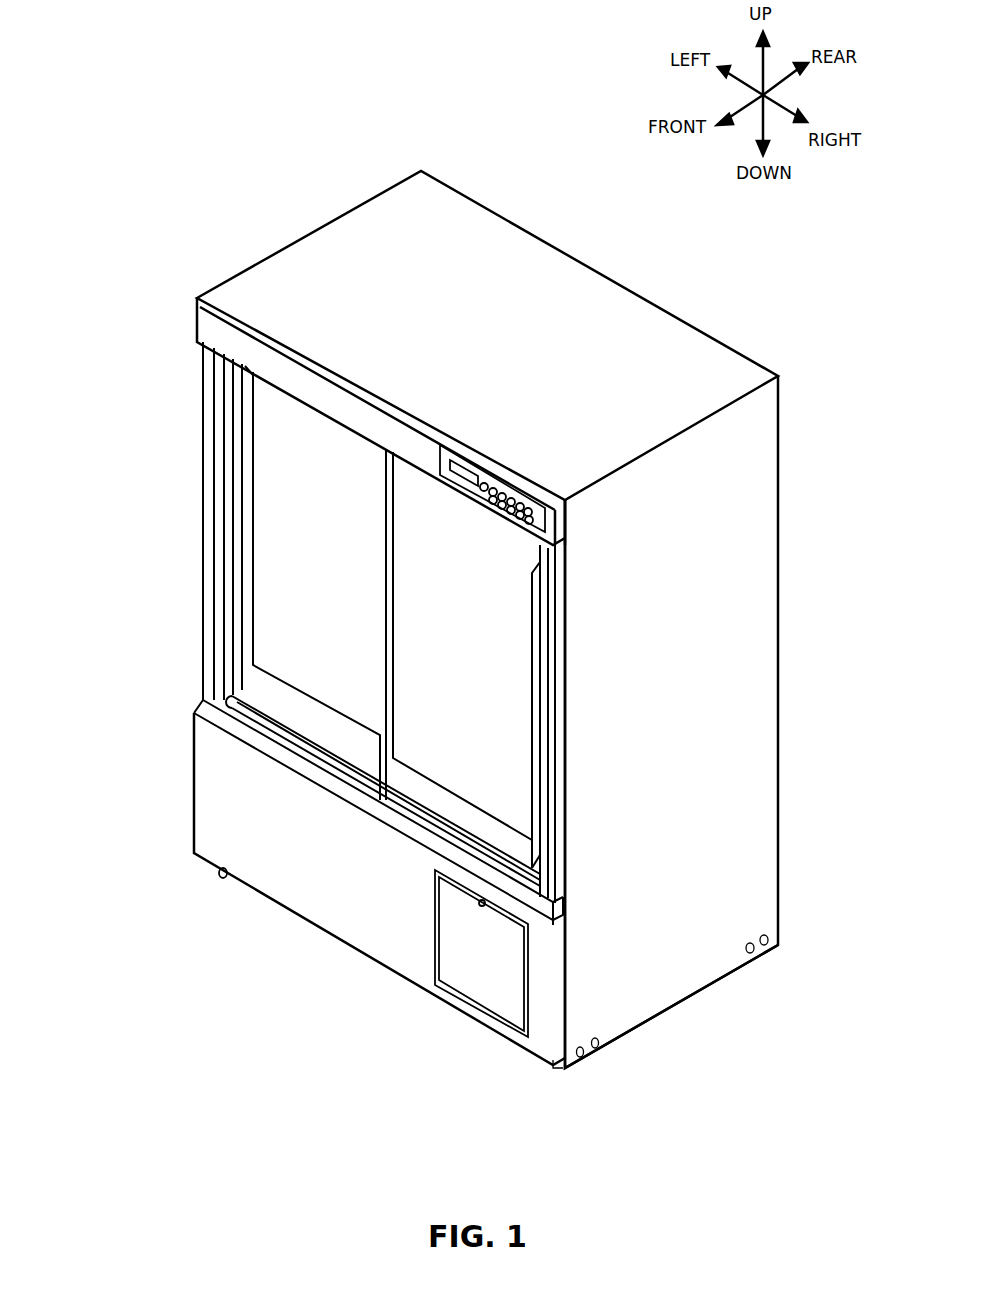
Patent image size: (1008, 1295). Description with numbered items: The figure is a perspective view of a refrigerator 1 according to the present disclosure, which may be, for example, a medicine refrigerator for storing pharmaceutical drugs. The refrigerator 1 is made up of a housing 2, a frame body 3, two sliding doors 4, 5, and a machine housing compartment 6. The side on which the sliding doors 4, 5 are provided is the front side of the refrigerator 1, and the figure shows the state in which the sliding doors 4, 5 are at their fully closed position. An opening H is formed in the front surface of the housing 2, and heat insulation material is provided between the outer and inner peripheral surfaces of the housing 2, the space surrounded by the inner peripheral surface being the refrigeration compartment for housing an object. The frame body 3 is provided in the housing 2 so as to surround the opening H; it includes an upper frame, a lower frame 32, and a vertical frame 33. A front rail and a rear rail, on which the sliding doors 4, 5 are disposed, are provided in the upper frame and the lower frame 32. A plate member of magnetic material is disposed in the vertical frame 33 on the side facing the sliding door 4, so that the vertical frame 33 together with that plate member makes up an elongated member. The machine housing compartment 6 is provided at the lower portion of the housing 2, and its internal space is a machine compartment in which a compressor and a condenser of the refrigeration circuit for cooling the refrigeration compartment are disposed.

The refrigerator 1 is at (330, 152).
The housing 2 is at (755, 340).
The frame body 3 is at (213, 560).
The vertical frame 33 is at (222, 653).
The opening H is at (230, 670).
The lower frame 32 is at (270, 748).
The sliding door 5 is at (350, 730).
The sliding door 4 is at (455, 765).
The machine housing compartment 6 is at (720, 880).